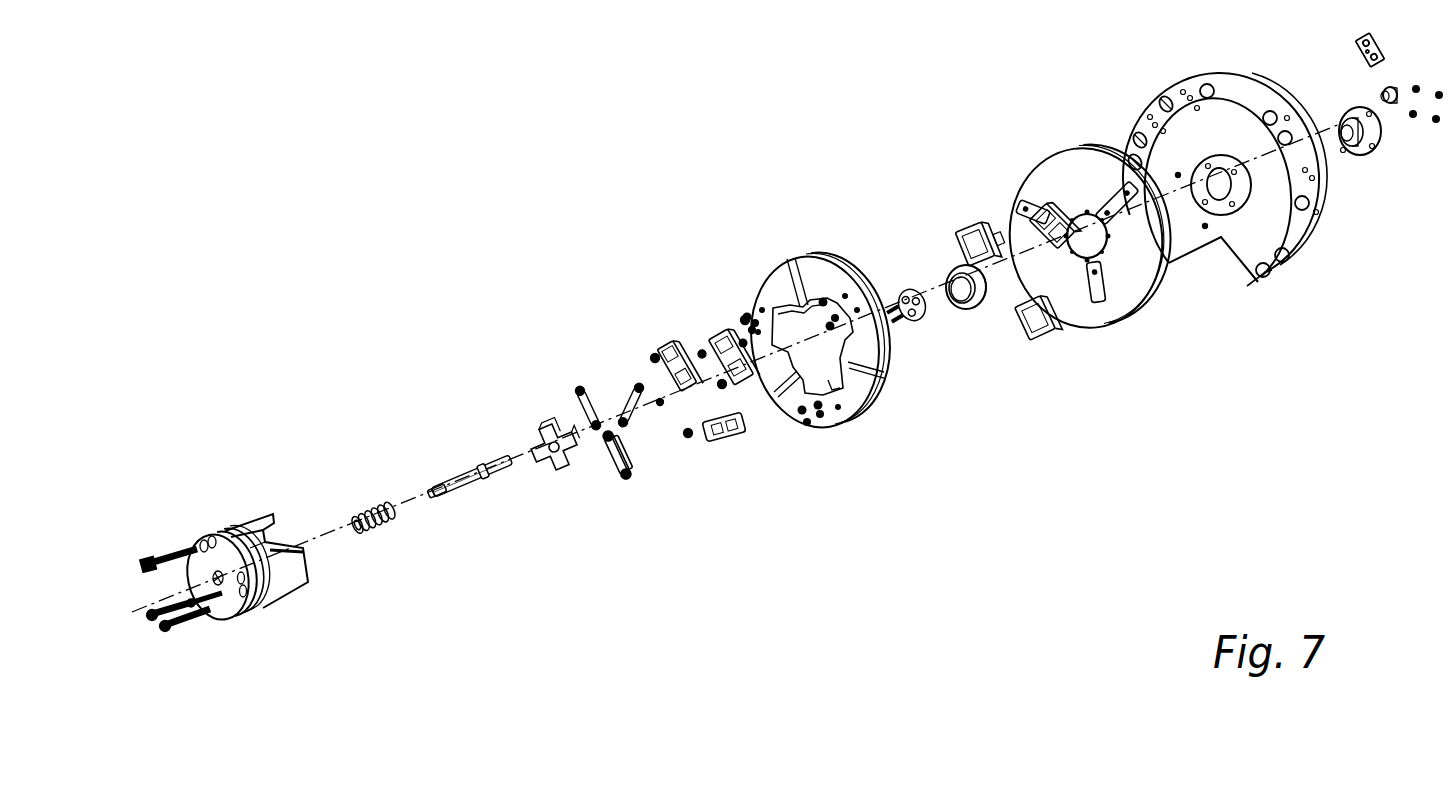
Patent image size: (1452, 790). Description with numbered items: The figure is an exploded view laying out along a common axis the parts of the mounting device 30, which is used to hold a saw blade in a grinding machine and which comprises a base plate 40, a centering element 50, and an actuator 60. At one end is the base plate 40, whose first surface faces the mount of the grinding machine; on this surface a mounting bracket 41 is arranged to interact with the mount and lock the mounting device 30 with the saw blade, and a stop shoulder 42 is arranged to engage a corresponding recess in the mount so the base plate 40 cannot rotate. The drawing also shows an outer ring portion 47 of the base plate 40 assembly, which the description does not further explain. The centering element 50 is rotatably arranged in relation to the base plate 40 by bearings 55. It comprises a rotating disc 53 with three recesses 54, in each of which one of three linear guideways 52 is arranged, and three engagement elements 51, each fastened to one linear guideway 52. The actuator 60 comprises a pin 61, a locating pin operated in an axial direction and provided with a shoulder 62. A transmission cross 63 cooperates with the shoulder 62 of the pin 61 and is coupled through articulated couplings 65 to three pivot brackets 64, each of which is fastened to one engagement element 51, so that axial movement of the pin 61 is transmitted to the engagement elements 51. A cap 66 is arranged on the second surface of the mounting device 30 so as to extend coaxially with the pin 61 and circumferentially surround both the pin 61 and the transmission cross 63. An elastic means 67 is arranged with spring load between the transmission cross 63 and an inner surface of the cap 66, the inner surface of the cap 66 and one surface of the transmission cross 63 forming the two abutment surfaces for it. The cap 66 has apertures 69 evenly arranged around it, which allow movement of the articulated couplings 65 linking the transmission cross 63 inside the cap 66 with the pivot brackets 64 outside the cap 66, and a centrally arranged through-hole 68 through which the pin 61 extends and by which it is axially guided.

The mounting device 30 is at (842, 86).
The base plate 40 is at (1220, 205).
The mounting bracket 41 is at (1378, 95).
The stop shoulder 42 is at (1386, 51).
The outer ring 47 is at (1200, 130).
The centering element 50 is at (1098, 348).
The engagement element 51 is at (778, 280).
The linear guideway 52 is at (970, 226).
The rotating disc 53 is at (1137, 266).
The recess 54 is at (1110, 190).
The bearing 55 is at (992, 302).
The actuator 60 is at (815, 480).
The pin 61 is at (432, 497).
The shoulder 62 is at (487, 465).
The transmission cross 63 is at (566, 472).
The pivot bracket 64 is at (668, 353).
The articulated coupling 65 is at (632, 461).
The cap 66 is at (248, 552).
The elastic means 67 is at (374, 531).
The through-hole 68 is at (193, 580).
The aperture 69 is at (273, 540).